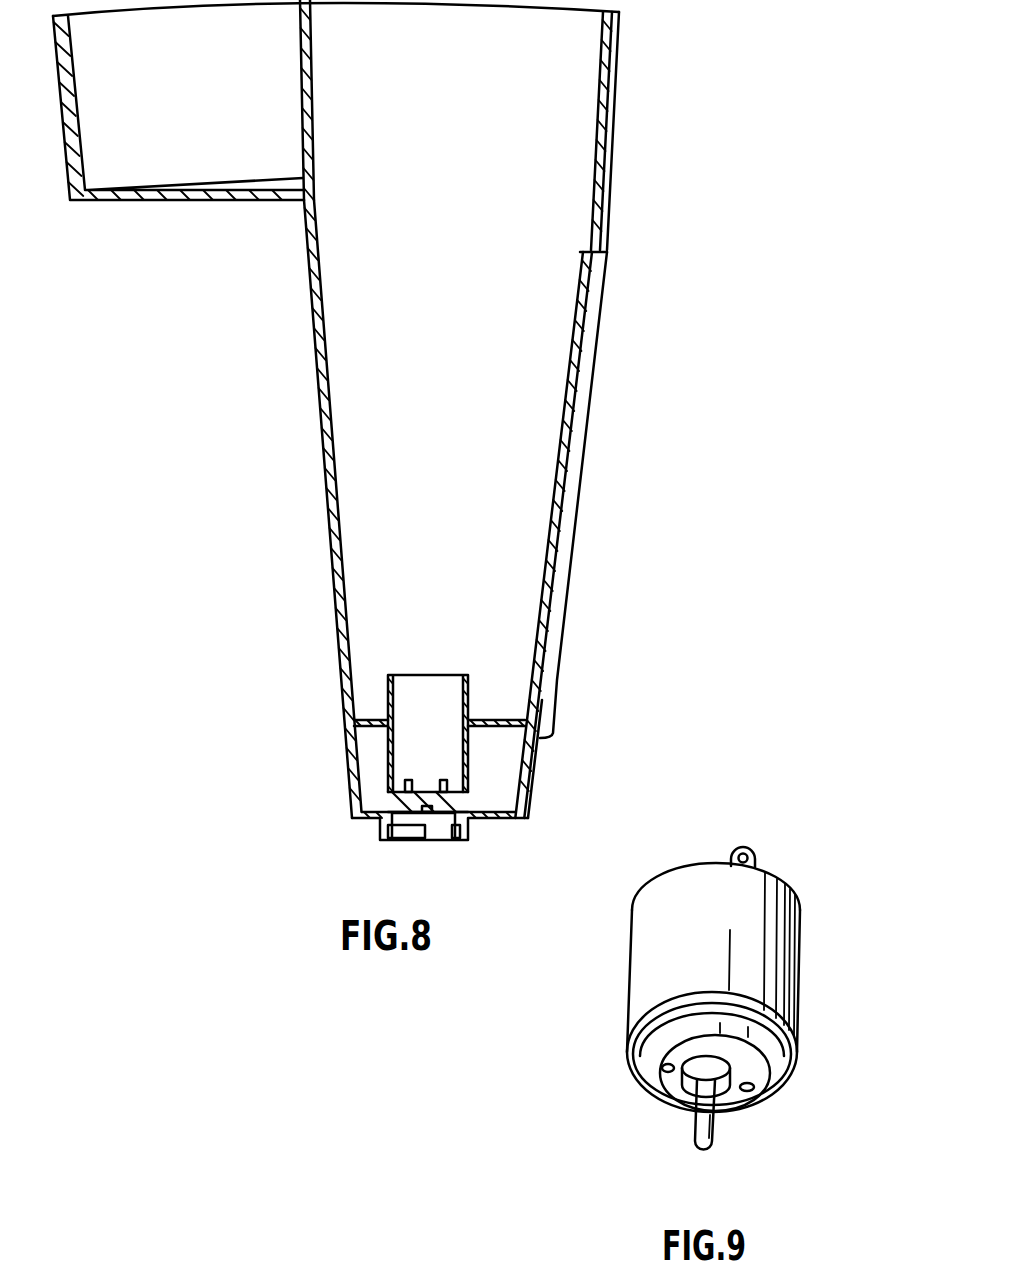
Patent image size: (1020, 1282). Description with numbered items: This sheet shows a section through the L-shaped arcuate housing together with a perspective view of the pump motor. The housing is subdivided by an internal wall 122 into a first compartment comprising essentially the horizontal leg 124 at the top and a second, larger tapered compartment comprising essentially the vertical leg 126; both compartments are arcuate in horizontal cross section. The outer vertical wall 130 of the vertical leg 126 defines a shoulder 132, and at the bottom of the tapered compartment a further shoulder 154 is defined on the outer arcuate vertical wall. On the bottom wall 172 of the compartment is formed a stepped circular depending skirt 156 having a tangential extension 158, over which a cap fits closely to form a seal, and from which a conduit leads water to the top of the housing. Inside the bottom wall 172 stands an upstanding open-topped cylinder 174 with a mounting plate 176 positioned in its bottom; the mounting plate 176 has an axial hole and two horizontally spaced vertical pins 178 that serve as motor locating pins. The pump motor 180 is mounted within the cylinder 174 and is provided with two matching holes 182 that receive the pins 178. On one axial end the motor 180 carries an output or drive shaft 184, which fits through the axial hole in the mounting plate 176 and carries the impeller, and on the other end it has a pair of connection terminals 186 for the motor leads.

In FIG. 8, the internal wall 122 is at (312, 118).
In FIG. 8, the horizontal leg 124 is at (220, 203).
In FIG. 8, the vertical leg 126 is at (312, 303).
In FIG. 8, the outer vertical wall 130 is at (563, 479).
In FIG. 8, the shoulder 132 is at (605, 256).
In FIG. 8, the shoulder 154 is at (545, 740).
In FIG. 8, the stepped circular depending skirt 156 is at (468, 826).
In FIG. 8, the tangential extension 158 is at (442, 836).
In FIG. 8, the bottom wall 172 is at (505, 820).
In FIG. 8, the upstanding open-topped cylinder 174 is at (396, 692).
In FIG. 8, the mounting plate 176 is at (427, 790).
In FIG. 8, the pins 178 is at (449, 786).
In FIG. 9, the pump motor 180 is at (790, 948).
In FIG. 9, the holes 182 is at (666, 1074).
In FIG. 9, the drive shaft 184 is at (697, 1150).
In FIG. 9, the connection terminals 186 is at (733, 845).